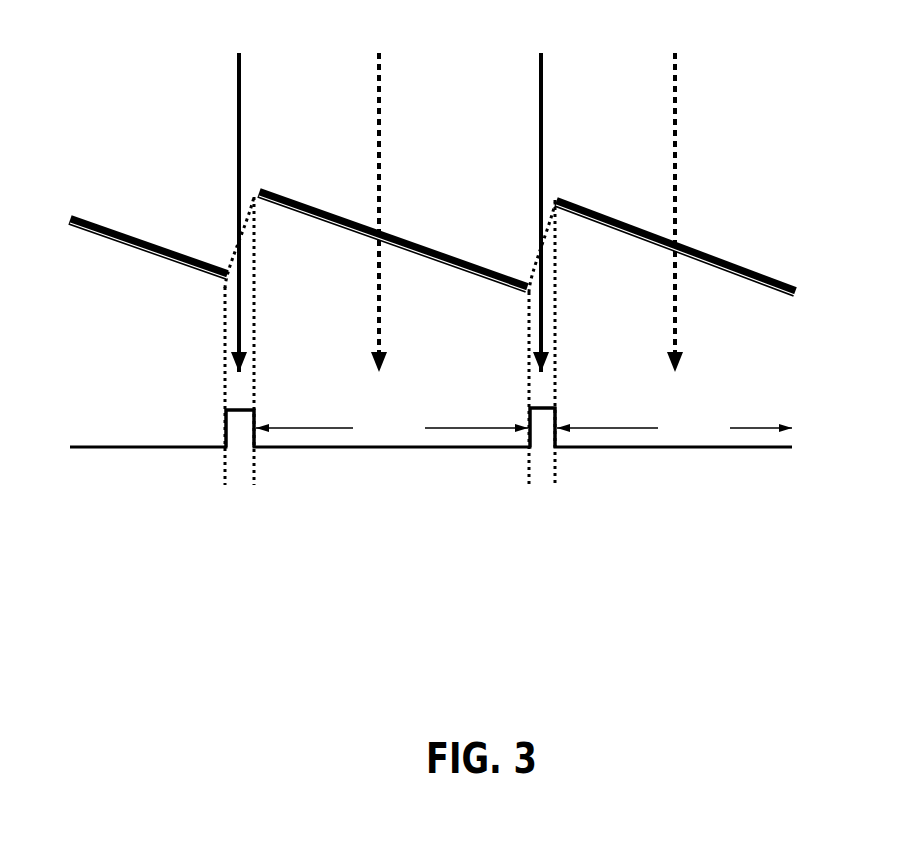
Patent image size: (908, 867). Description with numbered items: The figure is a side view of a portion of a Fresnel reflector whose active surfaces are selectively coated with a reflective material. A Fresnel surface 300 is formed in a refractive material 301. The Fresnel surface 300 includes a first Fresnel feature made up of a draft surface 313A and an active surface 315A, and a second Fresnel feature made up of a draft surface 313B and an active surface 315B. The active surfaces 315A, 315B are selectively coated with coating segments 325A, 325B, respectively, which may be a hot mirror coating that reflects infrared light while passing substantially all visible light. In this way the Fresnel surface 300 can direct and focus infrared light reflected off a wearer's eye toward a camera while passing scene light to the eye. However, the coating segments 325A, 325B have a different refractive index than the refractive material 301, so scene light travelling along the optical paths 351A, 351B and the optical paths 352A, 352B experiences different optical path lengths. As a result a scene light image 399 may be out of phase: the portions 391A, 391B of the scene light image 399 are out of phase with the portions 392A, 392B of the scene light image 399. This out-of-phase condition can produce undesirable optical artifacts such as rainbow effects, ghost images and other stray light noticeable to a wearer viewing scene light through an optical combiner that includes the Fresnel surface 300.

The Fresnel surface 300 is at (808, 259).
The refractive material 301 is at (330, 307).
The draft surface 313A is at (231, 257).
The draft surface 313B is at (538, 265).
The active surface 315A is at (471, 283).
The active surface 315B is at (714, 274).
The coating segment 325A is at (399, 231).
The coating segment 325B is at (695, 241).
The optical path 351A is at (239, 70).
The optical path 351B is at (541, 70).
The optical path 352A is at (379, 70).
The optical path 352B is at (675, 70).
The portion of scene light image 391A is at (238, 438).
The portion of scene light image 391B is at (542, 438).
The portion of scene light image 392A is at (392, 430).
The portion of scene light image 392B is at (674, 430).
The scene light image 399 is at (428, 432).